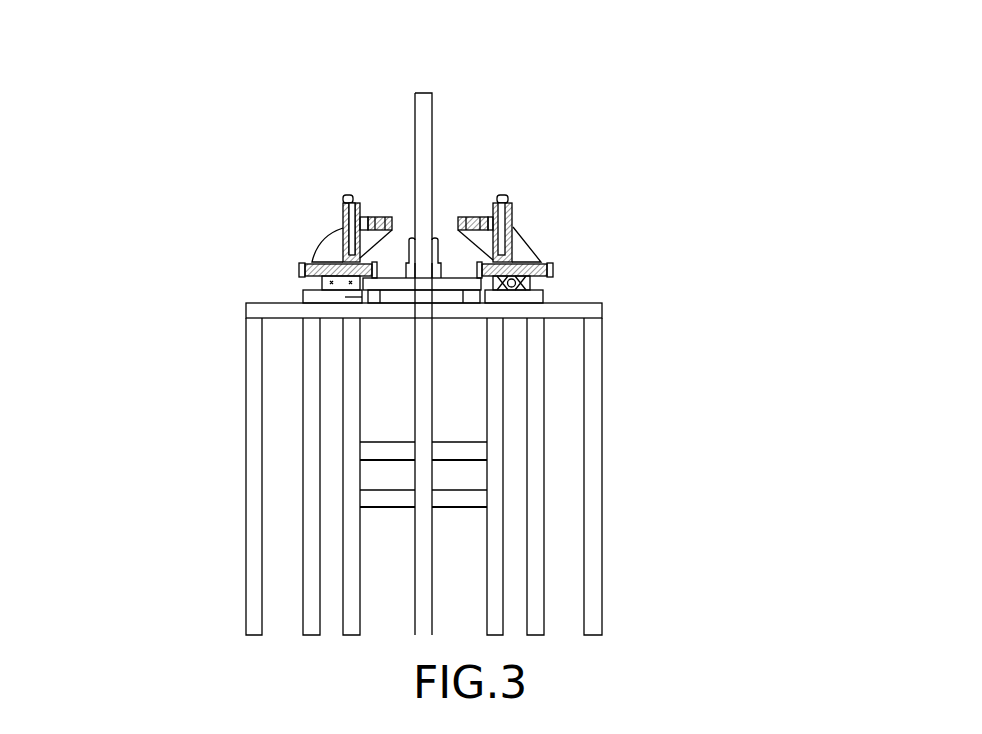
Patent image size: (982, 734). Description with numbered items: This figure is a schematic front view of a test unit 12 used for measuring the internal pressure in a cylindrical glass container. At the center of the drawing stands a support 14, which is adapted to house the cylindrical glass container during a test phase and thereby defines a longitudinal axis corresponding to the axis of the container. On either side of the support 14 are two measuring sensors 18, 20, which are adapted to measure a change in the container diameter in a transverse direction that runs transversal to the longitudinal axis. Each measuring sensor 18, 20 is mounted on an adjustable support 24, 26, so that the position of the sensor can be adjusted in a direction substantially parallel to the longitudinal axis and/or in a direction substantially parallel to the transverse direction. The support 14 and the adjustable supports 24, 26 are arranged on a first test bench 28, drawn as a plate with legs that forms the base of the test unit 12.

The test unit 12 is at (608, 187).
The support 14 is at (436, 238).
The measuring sensor 18 is at (323, 246).
The measuring sensor 20 is at (533, 237).
The adjustable support 24 is at (282, 179).
The adjustable support 26 is at (610, 181).
The first test bench 28 is at (246, 310).